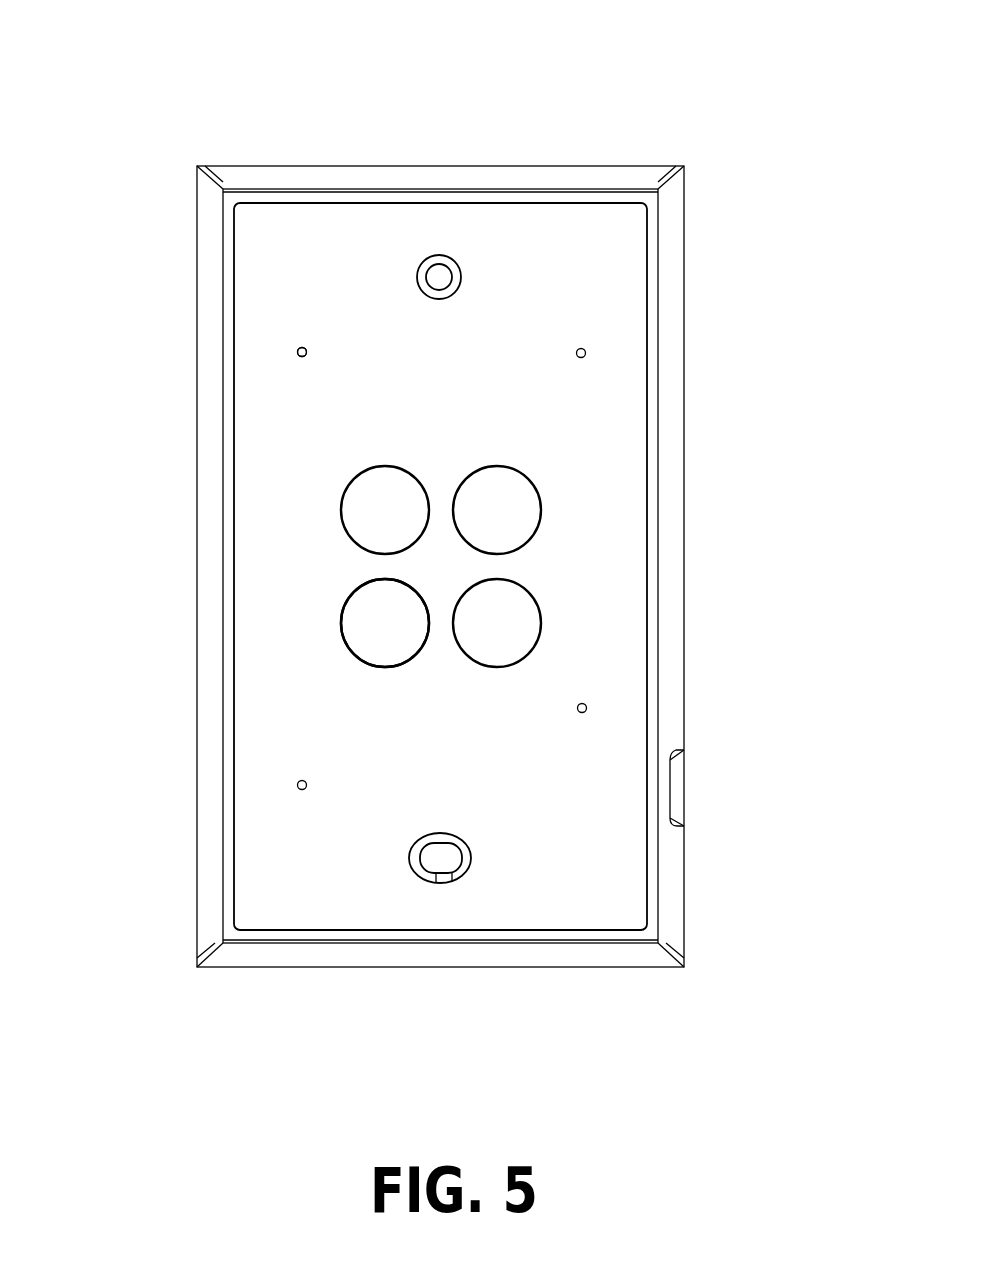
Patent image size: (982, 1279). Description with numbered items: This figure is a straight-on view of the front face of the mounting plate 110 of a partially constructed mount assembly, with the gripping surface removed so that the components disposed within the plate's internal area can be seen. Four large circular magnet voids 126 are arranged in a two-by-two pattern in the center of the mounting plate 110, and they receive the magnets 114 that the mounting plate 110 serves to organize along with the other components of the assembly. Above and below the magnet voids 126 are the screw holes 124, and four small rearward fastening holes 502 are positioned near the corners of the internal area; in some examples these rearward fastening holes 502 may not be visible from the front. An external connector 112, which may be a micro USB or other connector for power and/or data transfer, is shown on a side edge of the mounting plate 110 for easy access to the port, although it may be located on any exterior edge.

The mounting plate 110 is at (235, 76).
The screw holes 124 is at (440, 277).
The rearward fastening holes 502 is at (299, 347).
The magnet voids 126 is at (352, 478).
The magnets 114 is at (370, 627).
The external connector 112 is at (684, 797).